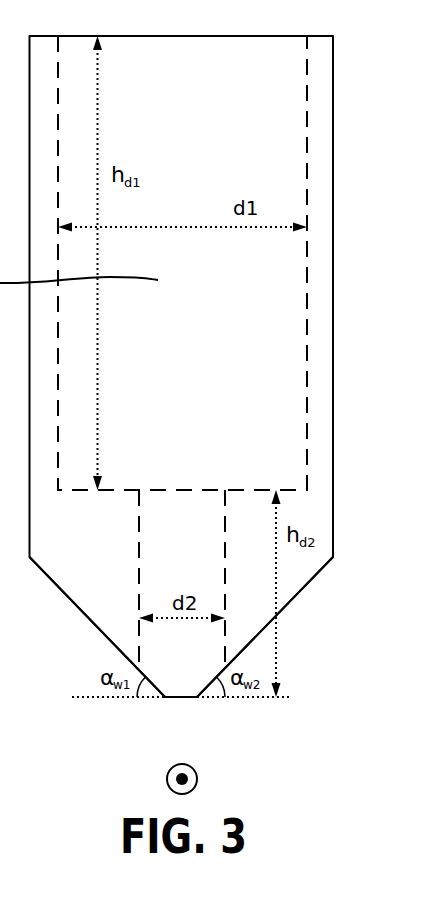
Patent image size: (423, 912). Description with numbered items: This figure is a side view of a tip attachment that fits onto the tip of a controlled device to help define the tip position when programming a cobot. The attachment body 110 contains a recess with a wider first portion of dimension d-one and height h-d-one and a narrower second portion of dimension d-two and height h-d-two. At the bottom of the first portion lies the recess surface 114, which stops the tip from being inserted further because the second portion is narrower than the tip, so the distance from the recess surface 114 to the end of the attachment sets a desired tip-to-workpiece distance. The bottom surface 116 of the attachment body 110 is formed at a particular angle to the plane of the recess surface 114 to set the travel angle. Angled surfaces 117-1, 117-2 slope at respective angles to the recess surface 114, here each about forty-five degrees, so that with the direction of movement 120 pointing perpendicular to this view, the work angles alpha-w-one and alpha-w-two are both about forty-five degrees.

The attachment body 110 is at (104, 538).
The recess surface 114 is at (118, 487).
The bottom surface 116 is at (178, 699).
The angled surface 117-1 is at (98, 628).
The angled surface 117-2 is at (300, 594).
The direction of movement 120 is at (204, 779).